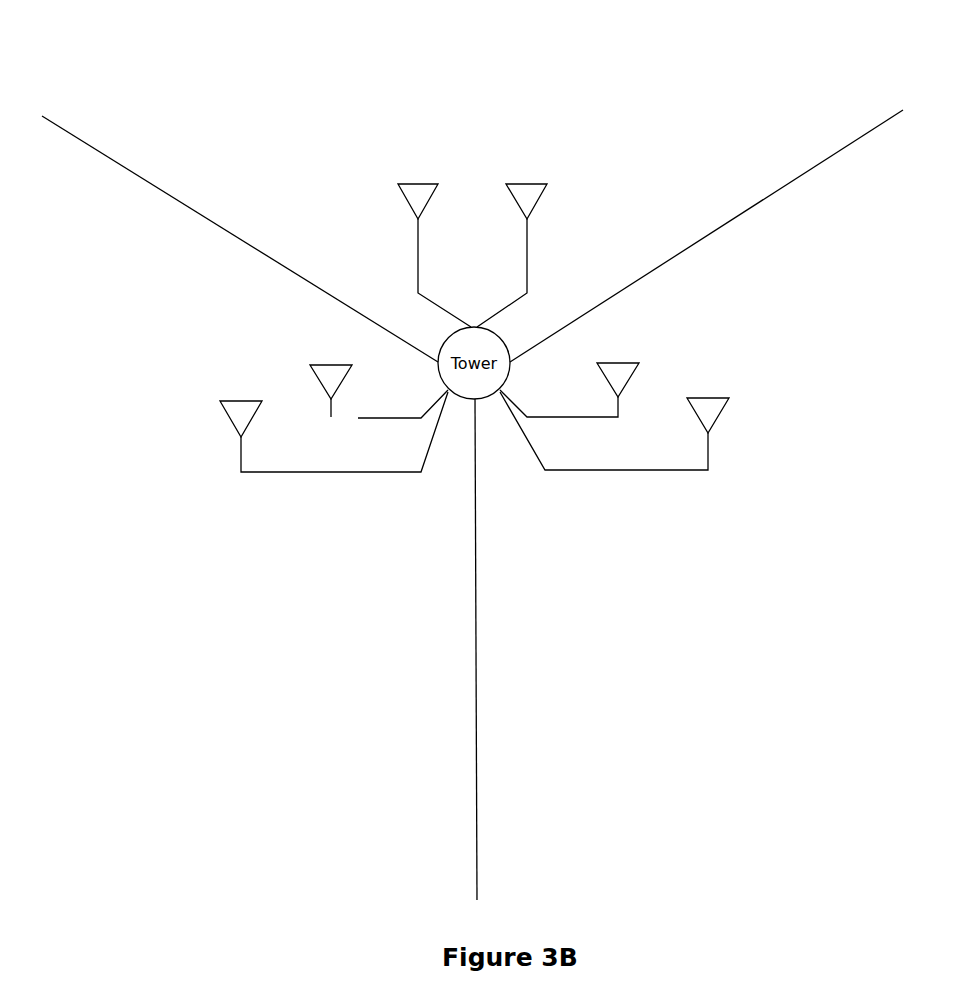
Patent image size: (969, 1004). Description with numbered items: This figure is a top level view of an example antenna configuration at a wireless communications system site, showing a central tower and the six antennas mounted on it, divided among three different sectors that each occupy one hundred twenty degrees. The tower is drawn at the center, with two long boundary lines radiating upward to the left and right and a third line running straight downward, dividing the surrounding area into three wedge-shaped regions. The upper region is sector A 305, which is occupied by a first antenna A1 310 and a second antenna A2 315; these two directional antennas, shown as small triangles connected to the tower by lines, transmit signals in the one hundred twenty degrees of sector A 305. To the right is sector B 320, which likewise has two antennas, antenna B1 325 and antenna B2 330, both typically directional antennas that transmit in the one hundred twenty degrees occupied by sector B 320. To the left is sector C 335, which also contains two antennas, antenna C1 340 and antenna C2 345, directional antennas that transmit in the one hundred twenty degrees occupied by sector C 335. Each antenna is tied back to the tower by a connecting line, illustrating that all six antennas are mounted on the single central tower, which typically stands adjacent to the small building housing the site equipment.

The sector A 305 is at (308, 75).
The first antenna (A1) 310 is at (418, 184).
The second antenna (A2) 315 is at (523, 184).
The sector B 320 is at (740, 537).
The antenna B1 325 is at (620, 362).
The antenna B2 330 is at (712, 397).
The sector C 335 is at (151, 535).
The antenna C1 340 is at (327, 363).
The antenna C2 345 is at (240, 400).